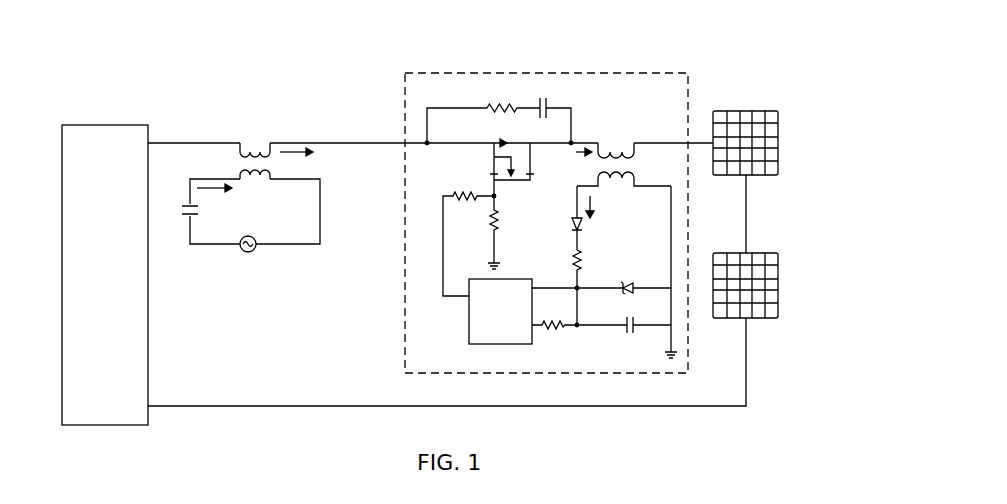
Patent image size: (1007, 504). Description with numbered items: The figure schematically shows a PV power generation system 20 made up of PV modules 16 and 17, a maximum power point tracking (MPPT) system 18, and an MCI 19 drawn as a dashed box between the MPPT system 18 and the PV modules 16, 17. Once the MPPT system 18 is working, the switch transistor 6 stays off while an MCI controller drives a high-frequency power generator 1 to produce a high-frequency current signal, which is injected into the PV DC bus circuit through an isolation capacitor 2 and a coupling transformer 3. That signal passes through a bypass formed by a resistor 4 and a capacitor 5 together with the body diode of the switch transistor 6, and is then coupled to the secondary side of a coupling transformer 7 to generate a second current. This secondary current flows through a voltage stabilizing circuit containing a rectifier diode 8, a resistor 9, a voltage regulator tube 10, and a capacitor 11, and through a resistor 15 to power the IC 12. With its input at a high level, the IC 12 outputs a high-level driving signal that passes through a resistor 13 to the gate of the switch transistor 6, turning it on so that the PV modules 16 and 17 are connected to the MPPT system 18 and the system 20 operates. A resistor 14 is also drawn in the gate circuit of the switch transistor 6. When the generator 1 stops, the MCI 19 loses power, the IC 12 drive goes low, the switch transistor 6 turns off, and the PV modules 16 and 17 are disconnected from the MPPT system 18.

The high-frequency power generator 1 is at (248, 258).
The isolation capacitor 2 is at (251, 211).
The coupling transformer 3 is at (276, 149).
The resistor 4 is at (482, 114).
The capacitor 5 is at (556, 114).
The switch transistor 6 is at (500, 167).
The coupling transformer 7 is at (623, 169).
The rectifier diode 8 is at (570, 218).
The resistor 9 is at (584, 269).
The voltage regulator tube 10 is at (611, 278).
The capacitor 11 is at (626, 272).
The IC 12 is at (510, 311).
The resistor 13 is at (464, 235).
The resistor 14 is at (504, 232).
The resistor 15 is at (554, 321).
The PV module 16 is at (786, 143).
The PV module 17 is at (786, 285).
The maximum power point tracking (MPPT) system 18 is at (105, 275).
The MCI 19 is at (577, 73).
The PV power generation system 20 is at (42, 45).